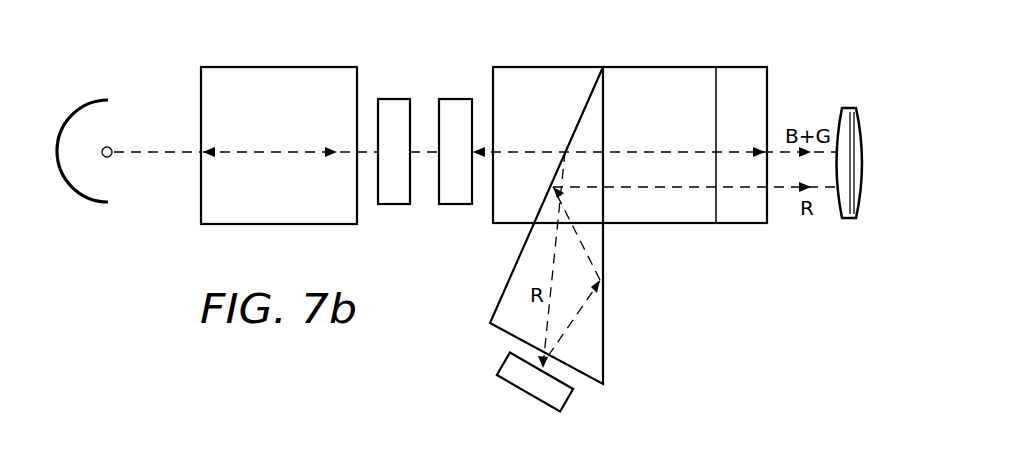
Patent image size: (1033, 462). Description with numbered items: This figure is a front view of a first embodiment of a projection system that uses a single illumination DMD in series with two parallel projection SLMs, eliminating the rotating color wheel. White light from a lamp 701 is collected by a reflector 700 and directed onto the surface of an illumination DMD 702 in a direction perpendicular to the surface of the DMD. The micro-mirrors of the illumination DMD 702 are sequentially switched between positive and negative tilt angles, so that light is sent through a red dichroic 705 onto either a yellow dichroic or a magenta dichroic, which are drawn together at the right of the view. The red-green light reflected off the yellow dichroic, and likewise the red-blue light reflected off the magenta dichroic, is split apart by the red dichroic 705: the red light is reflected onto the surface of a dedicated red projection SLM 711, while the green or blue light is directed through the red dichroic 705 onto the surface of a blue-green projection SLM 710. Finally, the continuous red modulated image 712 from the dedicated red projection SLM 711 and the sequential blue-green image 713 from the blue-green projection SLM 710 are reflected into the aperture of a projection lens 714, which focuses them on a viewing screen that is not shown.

The reflector 700 is at (82, 108).
The lamp 701 is at (110, 157).
The illumination DMD 702 is at (393, 99).
The red dichroic 705 is at (604, 345).
The blue-green projection SLM 710 is at (456, 204).
The dedicated red projection SLM 711 is at (568, 396).
The continuous red modulated image 712 is at (633, 189).
The sequential blue-green image 713 is at (653, 150).
The projection lens 714 is at (850, 108).